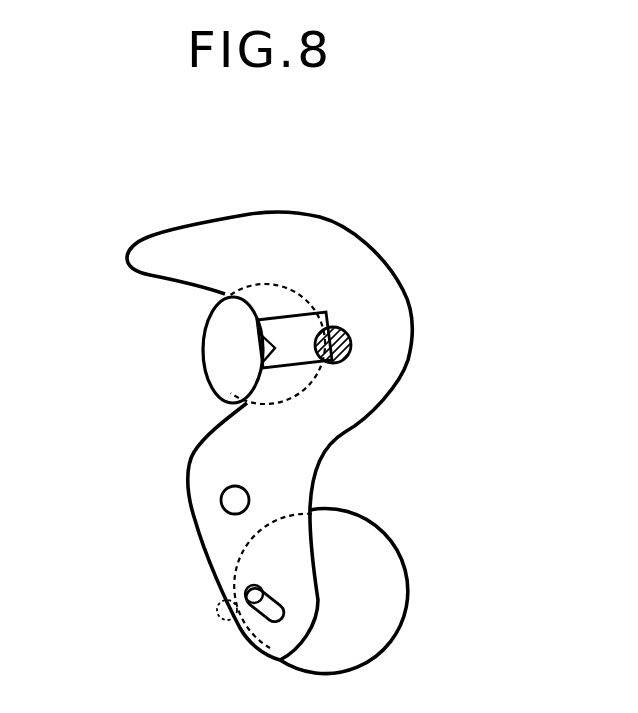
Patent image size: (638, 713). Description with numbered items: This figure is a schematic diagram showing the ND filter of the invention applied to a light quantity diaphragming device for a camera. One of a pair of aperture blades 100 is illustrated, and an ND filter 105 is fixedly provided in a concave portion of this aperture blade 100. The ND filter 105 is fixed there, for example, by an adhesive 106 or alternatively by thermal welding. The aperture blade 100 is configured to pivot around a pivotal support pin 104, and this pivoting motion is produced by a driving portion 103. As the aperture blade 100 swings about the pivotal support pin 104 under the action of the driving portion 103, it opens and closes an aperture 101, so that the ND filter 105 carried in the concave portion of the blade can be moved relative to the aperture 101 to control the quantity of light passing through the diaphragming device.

The aperture blade 100 is at (205, 222).
The aperture 101 is at (202, 353).
The driving portion 103 is at (404, 560).
The pivotal support pin 104 is at (220, 503).
The ND filter 105 is at (293, 323).
The adhesive 106 is at (353, 344).